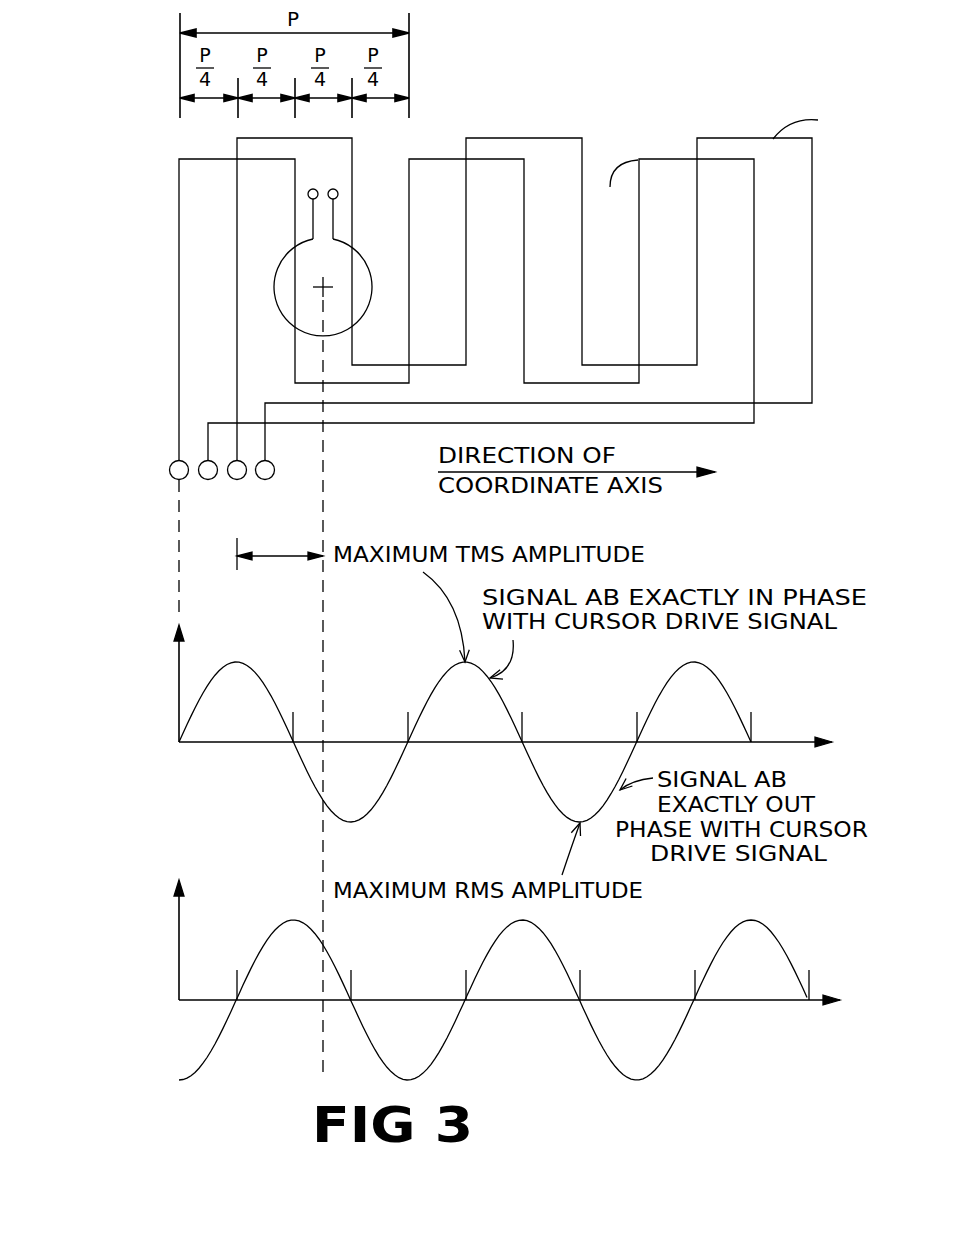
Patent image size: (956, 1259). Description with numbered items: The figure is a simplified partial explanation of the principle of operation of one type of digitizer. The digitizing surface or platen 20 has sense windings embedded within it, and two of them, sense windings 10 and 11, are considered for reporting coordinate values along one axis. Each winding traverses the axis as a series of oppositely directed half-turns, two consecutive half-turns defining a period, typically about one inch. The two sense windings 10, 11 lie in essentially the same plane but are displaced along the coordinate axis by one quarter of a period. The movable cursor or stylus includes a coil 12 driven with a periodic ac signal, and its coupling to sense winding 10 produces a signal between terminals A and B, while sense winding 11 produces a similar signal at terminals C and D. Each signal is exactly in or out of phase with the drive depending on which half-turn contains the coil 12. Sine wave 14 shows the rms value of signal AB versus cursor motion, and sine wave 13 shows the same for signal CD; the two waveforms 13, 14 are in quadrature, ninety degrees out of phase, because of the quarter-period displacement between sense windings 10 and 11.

The sense winding 10 is at (254, 372).
The sense winding 11 is at (517, 307).
The coil 12 is at (371, 277).
The sine wave 13 is at (325, 944).
The sine wave 14 is at (237, 662).
The platen 20 is at (517, 277).